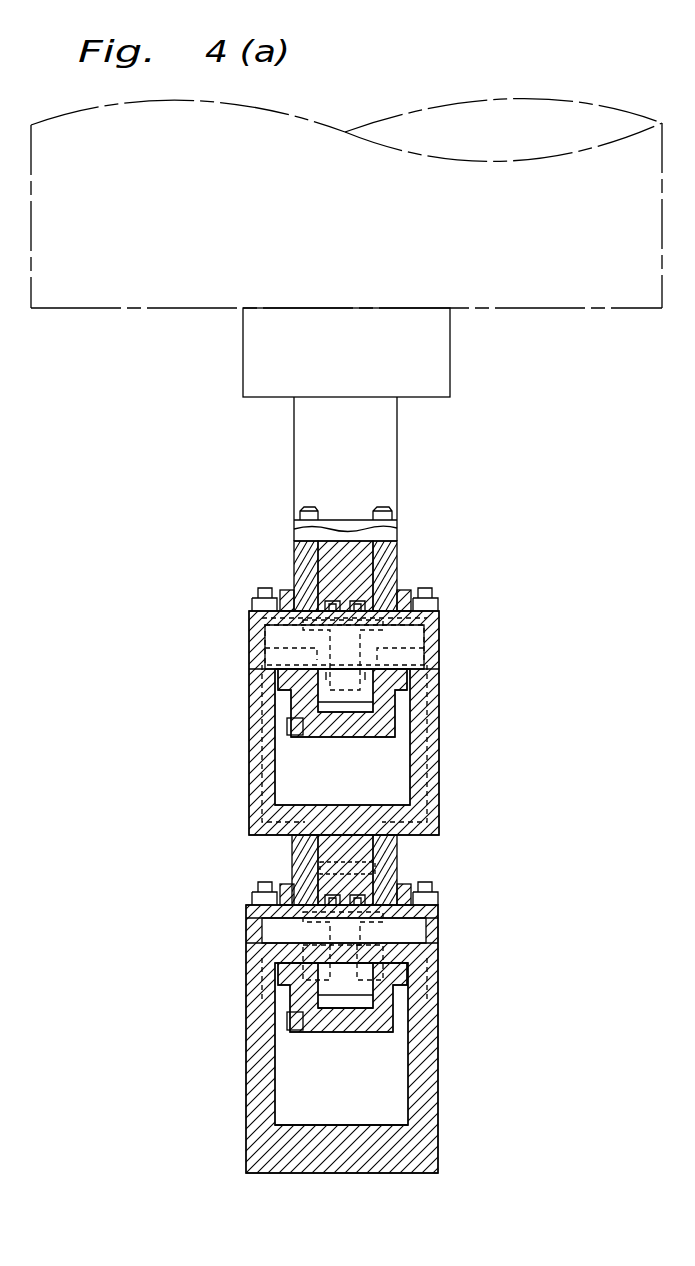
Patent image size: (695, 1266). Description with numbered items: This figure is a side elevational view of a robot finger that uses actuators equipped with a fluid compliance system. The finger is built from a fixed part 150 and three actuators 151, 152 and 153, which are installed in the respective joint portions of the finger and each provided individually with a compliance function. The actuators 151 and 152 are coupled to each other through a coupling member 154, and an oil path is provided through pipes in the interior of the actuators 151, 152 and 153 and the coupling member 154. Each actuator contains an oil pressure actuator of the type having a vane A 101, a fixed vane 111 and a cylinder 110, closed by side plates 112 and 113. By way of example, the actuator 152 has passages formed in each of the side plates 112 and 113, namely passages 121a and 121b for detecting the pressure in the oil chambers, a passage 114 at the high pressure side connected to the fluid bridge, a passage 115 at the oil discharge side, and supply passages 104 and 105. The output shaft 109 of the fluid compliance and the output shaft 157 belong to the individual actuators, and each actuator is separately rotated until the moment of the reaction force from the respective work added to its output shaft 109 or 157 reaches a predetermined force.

The fixed part 150 is at (428, 353).
The actuator 151 is at (355, 795).
The actuator 152 is at (357, 1063).
The actuator 153 is at (420, 1100).
The coupling member 154 is at (440, 765).
The output shaft 157 is at (250, 645).
The output shaft 109 is at (248, 948).
The fixed vane 111 is at (440, 875).
The supply passage 105 is at (440, 728).
The side plate 113 is at (385, 1018).
The side plate 112 is at (288, 1020).
The supply passage 104 is at (248, 705).
The passage at the high pressure side 114 is at (440, 612).
The passage at the oil discharge side 115 is at (248, 618).
The detecting means / passage for detecting pressure 121a is at (440, 660).
The detecting means / passage for detecting pressure 121b is at (248, 660).
The vane A 101 is at (330, 1000).
The cylinder 110 is at (350, 1018).